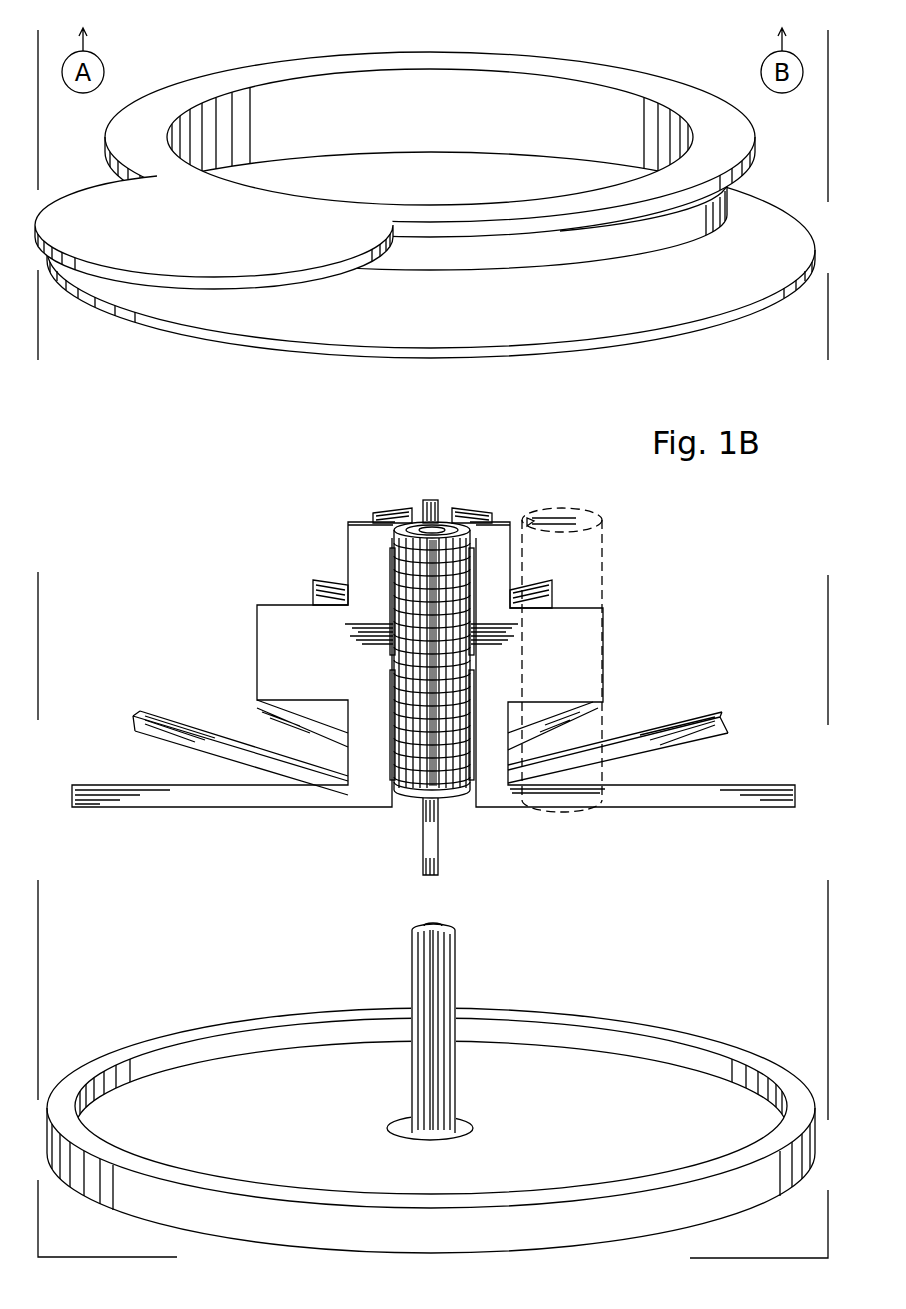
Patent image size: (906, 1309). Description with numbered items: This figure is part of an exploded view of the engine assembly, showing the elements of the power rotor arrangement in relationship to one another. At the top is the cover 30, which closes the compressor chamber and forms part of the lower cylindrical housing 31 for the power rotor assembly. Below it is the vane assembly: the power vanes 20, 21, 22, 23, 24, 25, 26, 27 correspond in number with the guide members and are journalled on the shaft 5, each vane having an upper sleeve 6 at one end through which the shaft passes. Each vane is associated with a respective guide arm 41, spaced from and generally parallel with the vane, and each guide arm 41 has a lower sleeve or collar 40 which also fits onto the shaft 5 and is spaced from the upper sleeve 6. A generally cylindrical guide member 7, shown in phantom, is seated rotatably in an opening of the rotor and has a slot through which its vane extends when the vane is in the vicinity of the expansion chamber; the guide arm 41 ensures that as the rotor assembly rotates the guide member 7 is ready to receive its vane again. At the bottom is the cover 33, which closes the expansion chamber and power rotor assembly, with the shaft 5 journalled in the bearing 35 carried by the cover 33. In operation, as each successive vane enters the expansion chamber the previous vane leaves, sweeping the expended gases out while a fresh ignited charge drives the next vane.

The lower cylindrical housing 31 is at (732, 130).
The cover 30 is at (143, 260).
The power vane 21 is at (267, 655).
The power vane 22 is at (328, 580).
The power vane 27 is at (593, 660).
The power vane 26 is at (553, 597).
The upper sleeve 6 is at (393, 533).
The lower sleeve 40 is at (392, 645).
The power vane 24 is at (440, 507).
The power vane 23 is at (407, 505).
The power vane 25 is at (470, 507).
The guide member 7 is at (587, 545).
The guide arm 41 is at (635, 747).
The power vane 20 is at (432, 800).
The cover 33 is at (700, 1043).
The bearing 35 is at (467, 1127).
The shaft 5 is at (440, 952).